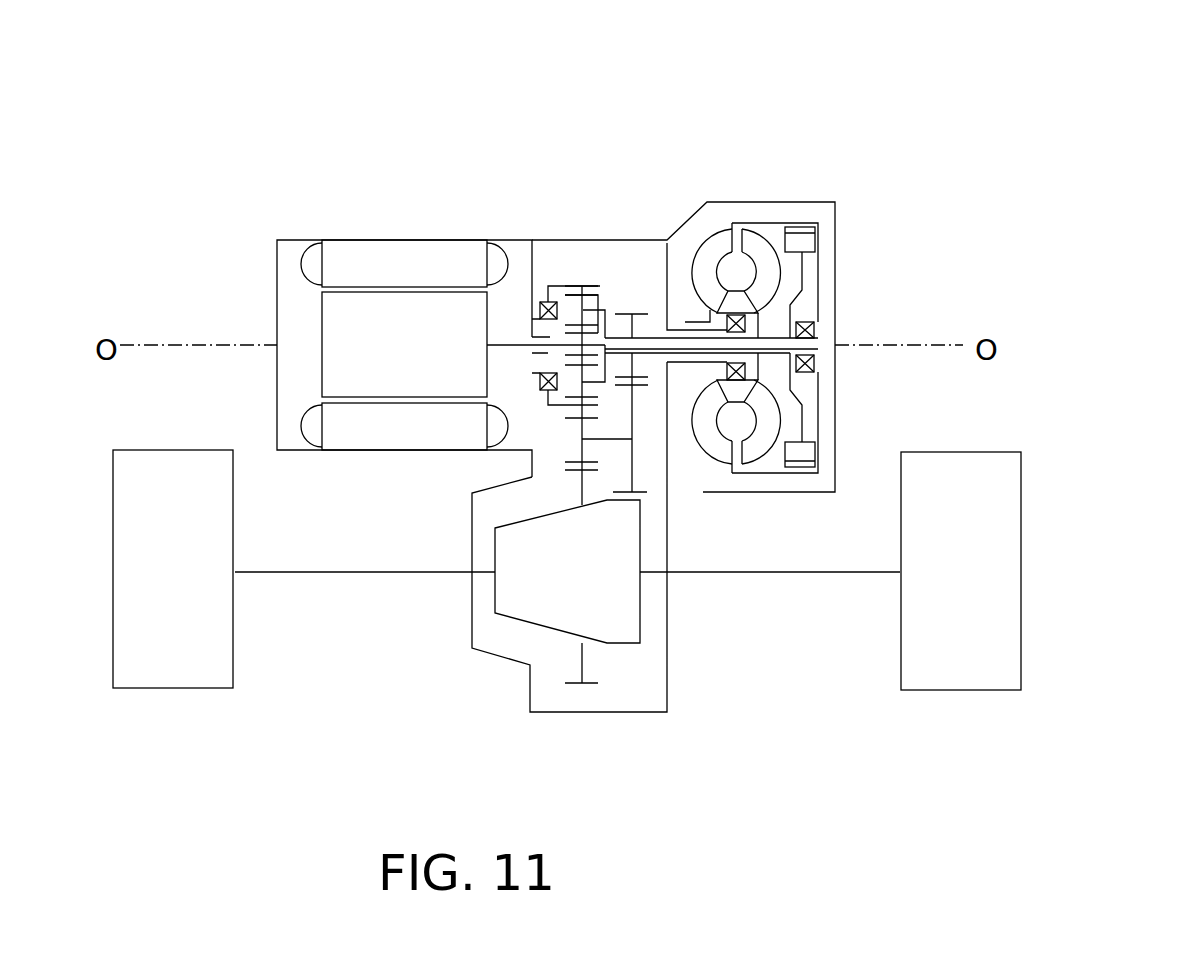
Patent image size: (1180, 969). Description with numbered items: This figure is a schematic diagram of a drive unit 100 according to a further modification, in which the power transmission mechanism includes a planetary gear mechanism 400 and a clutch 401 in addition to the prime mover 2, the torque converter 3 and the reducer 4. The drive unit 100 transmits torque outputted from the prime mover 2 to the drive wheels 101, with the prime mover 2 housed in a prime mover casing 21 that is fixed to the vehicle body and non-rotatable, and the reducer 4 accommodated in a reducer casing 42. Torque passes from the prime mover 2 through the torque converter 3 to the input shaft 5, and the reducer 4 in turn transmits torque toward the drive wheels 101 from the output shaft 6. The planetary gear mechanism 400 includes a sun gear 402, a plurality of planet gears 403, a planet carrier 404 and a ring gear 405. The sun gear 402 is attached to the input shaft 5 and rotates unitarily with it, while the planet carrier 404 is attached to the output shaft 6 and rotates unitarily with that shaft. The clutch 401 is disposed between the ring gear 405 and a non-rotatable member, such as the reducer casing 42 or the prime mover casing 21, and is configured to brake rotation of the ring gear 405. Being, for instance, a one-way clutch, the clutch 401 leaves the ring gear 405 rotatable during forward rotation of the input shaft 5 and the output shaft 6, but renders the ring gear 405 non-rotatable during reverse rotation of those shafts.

The drive unit 100 is at (845, 148).
The prime mover 2 is at (343, 240).
The prime mover casing 21 is at (420, 240).
The reducer casing 42 is at (652, 240).
The planetary gear mechanism 400 is at (620, 290).
The clutch 401 is at (540, 303).
The sun gear 402 is at (563, 348).
The planet gears 403 is at (585, 287).
The planet carrier 404 is at (597, 308).
The ring gear 405 is at (570, 287).
The reducer 4 is at (643, 403).
The torque converter 3 is at (768, 222).
The input shaft 5 is at (665, 452).
The output shaft 6 is at (752, 358).
The drive wheels 101 is at (1022, 488).